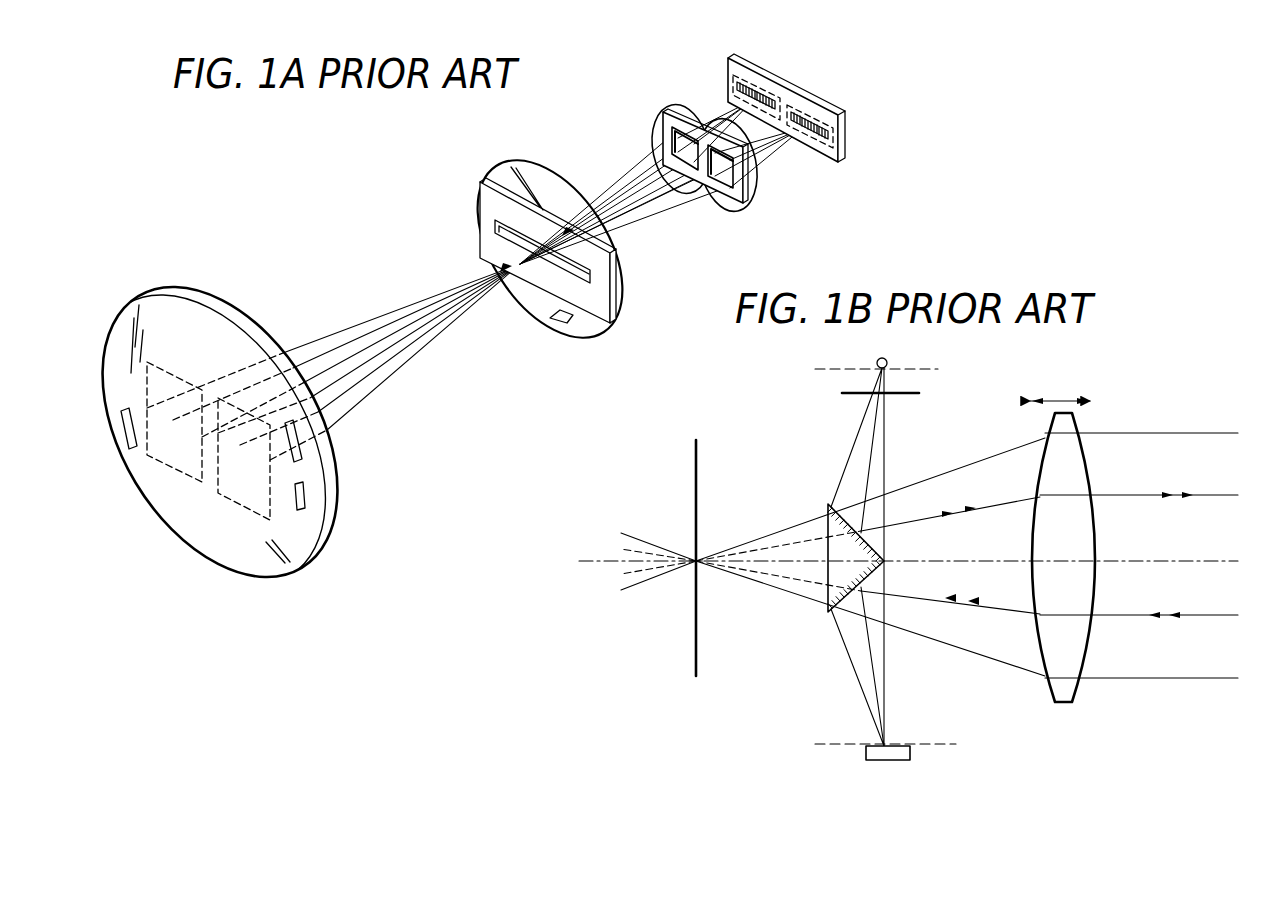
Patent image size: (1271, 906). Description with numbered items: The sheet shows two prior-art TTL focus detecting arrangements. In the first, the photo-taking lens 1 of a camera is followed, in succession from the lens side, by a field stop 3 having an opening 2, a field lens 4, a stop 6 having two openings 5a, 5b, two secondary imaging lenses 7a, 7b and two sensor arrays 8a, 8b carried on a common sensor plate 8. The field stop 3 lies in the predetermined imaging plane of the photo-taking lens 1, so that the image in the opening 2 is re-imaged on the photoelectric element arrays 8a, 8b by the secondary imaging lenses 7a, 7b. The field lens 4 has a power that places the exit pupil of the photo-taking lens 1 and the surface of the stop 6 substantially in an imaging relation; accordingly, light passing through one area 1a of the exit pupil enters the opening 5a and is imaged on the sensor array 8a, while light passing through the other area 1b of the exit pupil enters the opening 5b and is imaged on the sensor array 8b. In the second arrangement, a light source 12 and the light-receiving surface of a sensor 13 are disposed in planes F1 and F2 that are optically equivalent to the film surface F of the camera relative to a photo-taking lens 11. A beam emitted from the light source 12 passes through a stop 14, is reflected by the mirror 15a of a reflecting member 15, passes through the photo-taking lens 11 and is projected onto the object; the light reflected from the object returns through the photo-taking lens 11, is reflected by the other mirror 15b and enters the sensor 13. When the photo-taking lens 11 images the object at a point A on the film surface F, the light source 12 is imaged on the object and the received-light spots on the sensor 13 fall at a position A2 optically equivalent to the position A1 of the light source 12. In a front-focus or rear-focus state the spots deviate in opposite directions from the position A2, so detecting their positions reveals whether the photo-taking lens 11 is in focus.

In FIG. 1A, the photo-taking lens 1 is at (208, 288).
In FIG. 1A, the area of the exit pupil 1a is at (238, 506).
In FIG. 1A, the area of the exit pupil 1b is at (176, 470).
In FIG. 1A, the opening 2 is at (508, 235).
In FIG. 1A, the field stop 3 is at (483, 203).
In FIG. 1A, the field lens 4 is at (528, 158).
In FIG. 1A, the opening 5a is at (663, 128).
In FIG. 1A, the opening 5b is at (724, 190).
In FIG. 1A, the stop 6 is at (733, 203).
In FIG. 1A, the secondary imaging lens 7a is at (681, 106).
In FIG. 1A, the secondary imaging lens 7b is at (758, 178).
In FIG. 1A, the detector plate 8 is at (786, 108).
In FIG. 1A, the sensor array 8a is at (767, 92).
In FIG. 1A, the sensor array 8b is at (820, 118).
In FIG. 1B, the photo-taking lens 11 is at (1062, 706).
In FIG. 1B, the light source 12 is at (888, 362).
In FIG. 1B, the sensor 13 is at (912, 752).
In FIG. 1B, the stop 14 is at (903, 396).
In FIG. 1B, the reflecting member 15 is at (835, 569).
In FIG. 1B, the mirror 15a is at (857, 514).
In FIG. 1B, the mirror 15b is at (861, 603).
In FIG. 1B, the point A is at (700, 555).
In FIG. 1B, the position of the light source A1 is at (888, 370).
In FIG. 1B, the position A2 is at (900, 744).
In FIG. 1B, the film surface F is at (695, 619).
In FIG. 1B, the plane F1 is at (838, 366).
In FIG. 1B, the plane F2 is at (838, 742).